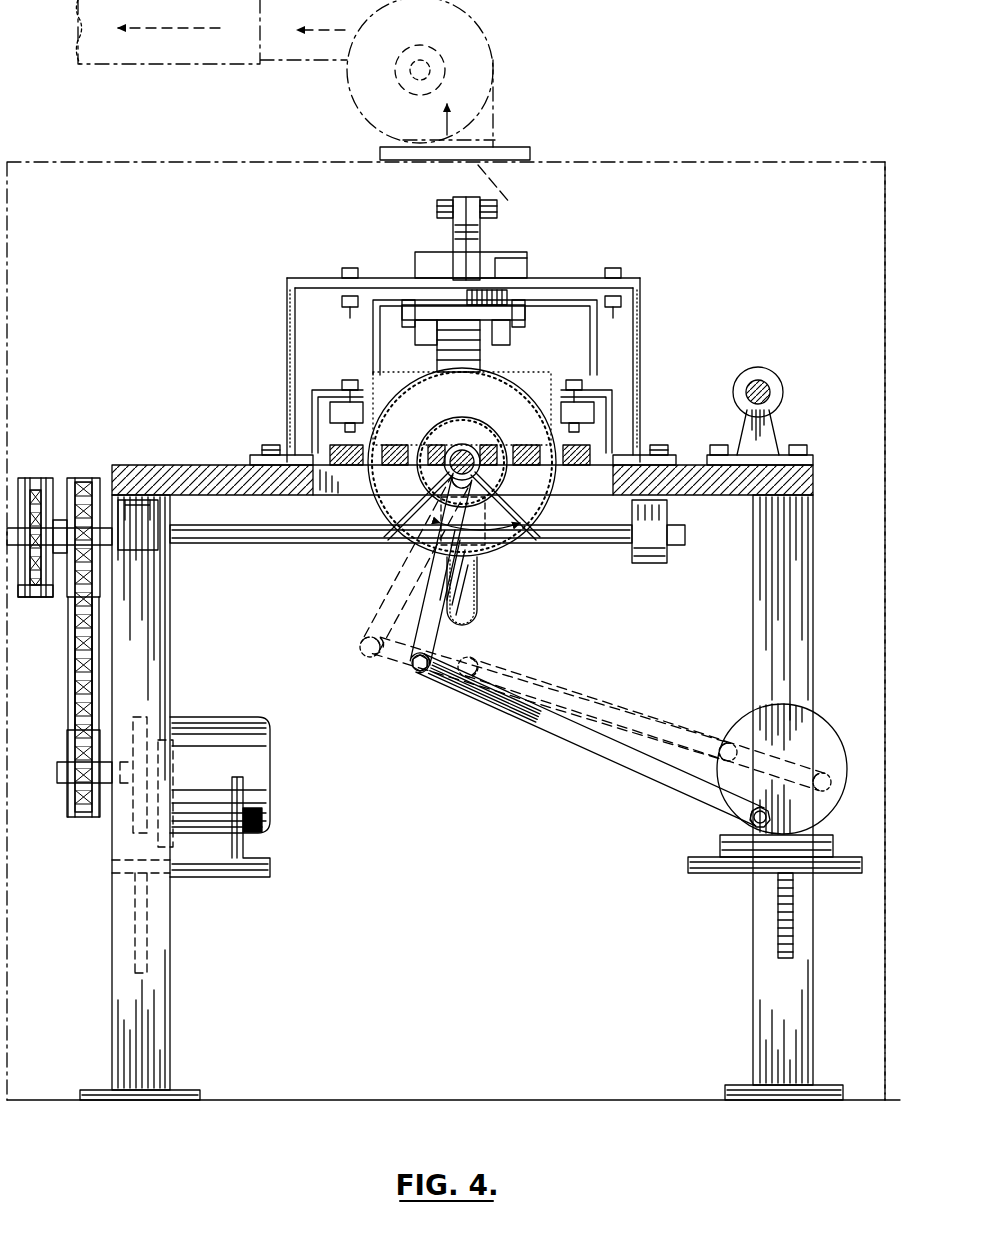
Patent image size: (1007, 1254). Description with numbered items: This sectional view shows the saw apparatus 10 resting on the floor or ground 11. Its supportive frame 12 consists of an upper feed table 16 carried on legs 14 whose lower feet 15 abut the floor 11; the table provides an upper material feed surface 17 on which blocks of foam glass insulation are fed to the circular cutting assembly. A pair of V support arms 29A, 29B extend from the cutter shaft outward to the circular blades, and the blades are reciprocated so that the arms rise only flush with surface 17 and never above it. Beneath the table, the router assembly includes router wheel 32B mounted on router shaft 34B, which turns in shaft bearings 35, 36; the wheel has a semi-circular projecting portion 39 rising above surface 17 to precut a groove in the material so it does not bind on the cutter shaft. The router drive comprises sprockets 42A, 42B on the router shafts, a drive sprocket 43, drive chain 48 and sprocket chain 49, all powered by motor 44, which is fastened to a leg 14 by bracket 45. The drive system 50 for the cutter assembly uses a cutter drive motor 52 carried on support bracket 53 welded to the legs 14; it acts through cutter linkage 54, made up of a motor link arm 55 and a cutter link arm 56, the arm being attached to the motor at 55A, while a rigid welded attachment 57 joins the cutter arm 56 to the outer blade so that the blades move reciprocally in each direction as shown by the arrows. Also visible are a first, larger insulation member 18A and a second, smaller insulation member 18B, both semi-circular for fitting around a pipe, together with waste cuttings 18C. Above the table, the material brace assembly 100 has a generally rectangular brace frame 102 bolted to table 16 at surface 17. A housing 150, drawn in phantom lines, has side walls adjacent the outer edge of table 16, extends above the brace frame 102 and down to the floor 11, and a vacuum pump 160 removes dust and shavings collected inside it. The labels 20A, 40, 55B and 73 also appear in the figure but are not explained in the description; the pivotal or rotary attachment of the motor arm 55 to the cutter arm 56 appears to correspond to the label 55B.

The saw apparatus 10 is at (741, 210).
The floor or ground 11 is at (614, 1098).
The supportive frame 12 is at (813, 482).
The supportive legs 14 is at (170, 680).
The lower feet 15 is at (148, 1100).
The upper feed table 16 is at (190, 468).
The material feed surface 17 is at (238, 458).
The first larger insulation member 18A is at (427, 422).
The second smaller insulation member 18B is at (487, 390).
The waste cuttings 18C is at (346, 392).
The shaft bearing 20A is at (584, 510).
The V support arm 29A is at (386, 540).
The V support arm 29B is at (506, 547).
The router wheel 32B is at (478, 596).
The router shaft 34B is at (300, 545).
The shaft bearing 35 is at (650, 563).
The shaft bearing 36 is at (152, 558).
The semi-circular projecting portion 39 is at (481, 446).
The chain drive 40 is at (66, 455).
The sprocket 42A is at (25, 597).
The sprocket 42B is at (64, 724).
The drive sprocket 43 is at (98, 478).
The router drive motor 44 is at (248, 768).
The bracket 45 is at (228, 872).
The drive chain 48 is at (100, 662).
The sprocket chain 49 is at (35, 478).
The drive system 50 is at (622, 794).
The cutter drive motor 52 is at (832, 824).
The support bracket 53 is at (828, 873).
The cutter linkage 54 is at (521, 716).
The motor link arm 55 is at (612, 751).
The attachment to motor 55A is at (823, 752).
The pin 55B is at (423, 674).
The cutter link arm 56 is at (430, 628).
The rigid welded attachment 57 is at (430, 560).
The hatched blocks 73 is at (518, 477).
The material brace assembly 100 is at (564, 252).
The brace frame 102 is at (287, 345).
The housing 150 is at (222, 166).
The vacuum pump 160 is at (470, 15).